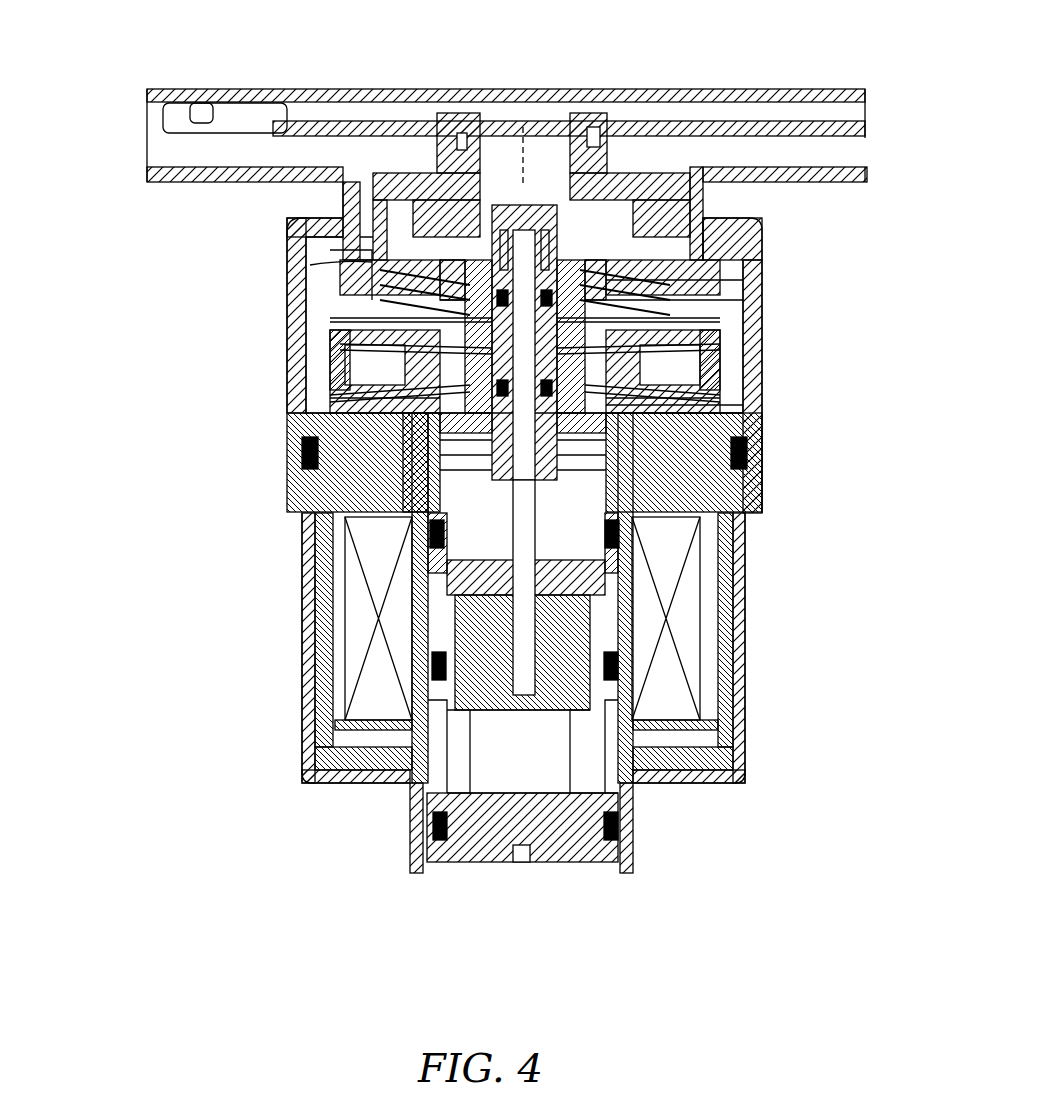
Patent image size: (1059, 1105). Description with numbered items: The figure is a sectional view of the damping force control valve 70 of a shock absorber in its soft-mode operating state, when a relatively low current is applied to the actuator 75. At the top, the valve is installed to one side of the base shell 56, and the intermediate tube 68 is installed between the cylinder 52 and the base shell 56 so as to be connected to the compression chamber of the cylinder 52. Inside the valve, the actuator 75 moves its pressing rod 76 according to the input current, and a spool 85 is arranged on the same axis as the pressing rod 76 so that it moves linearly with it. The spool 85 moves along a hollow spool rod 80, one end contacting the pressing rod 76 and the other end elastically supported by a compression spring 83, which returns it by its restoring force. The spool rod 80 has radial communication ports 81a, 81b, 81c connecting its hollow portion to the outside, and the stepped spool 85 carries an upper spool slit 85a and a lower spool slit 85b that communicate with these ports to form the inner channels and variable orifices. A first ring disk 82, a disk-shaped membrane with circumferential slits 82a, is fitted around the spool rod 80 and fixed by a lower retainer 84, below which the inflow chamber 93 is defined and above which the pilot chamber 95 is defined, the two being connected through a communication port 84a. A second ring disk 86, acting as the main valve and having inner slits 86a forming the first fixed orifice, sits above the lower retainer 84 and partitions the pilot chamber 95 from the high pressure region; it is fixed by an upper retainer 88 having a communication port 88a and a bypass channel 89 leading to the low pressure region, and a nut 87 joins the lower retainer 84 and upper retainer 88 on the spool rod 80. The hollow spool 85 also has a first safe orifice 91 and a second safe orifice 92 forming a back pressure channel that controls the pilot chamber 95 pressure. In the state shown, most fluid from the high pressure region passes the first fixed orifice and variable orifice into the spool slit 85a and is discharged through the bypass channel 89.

The cylinder 52 is at (768, 92).
The intermediate tube 68 is at (796, 125).
The base shell 56 is at (832, 140).
The damping force control valve 70 is at (165, 487).
The actuator 75 is at (748, 645).
The pressing rod 76 is at (745, 588).
The spool rod 80 is at (613, 247).
The communication port 81a is at (745, 452).
The communication port 81b is at (712, 347).
The communication port 81c is at (745, 268).
The first ring disk 82 is at (305, 466).
The slits 82a is at (305, 440).
The compression spring 83 is at (597, 240).
The lower retainer 84 is at (330, 366).
The communication port 84a is at (320, 420).
The spool 85 is at (340, 555).
The upper spool slit 85a is at (745, 294).
The lower spool slit 85b is at (745, 406).
The second ring disk 86 is at (330, 318).
The slits 86a is at (340, 346).
The nut 87 is at (417, 243).
The upper retainer 88 is at (345, 290).
The communication port 88a is at (310, 265).
The bypass channel 89 is at (745, 322).
The first safe orifice 91 is at (345, 240).
The second safe orifice 92 is at (745, 480).
The inflow chamber 93 is at (755, 426).
The pilot chamber 95 is at (760, 362).